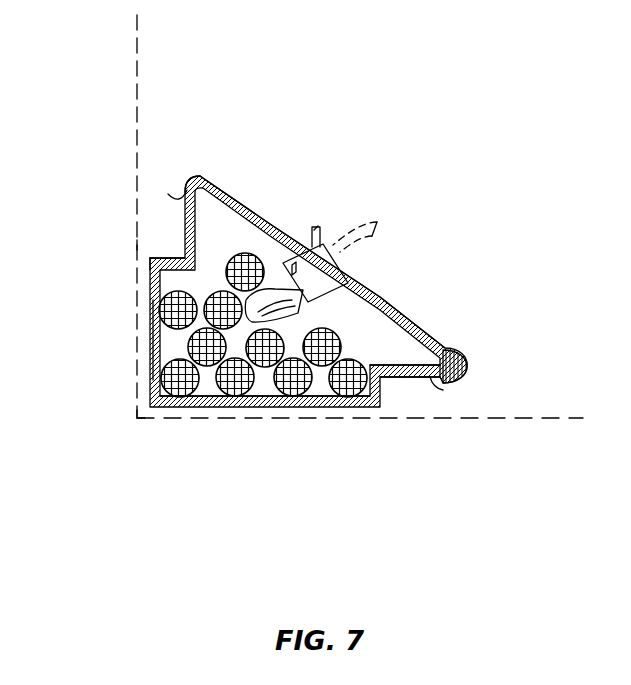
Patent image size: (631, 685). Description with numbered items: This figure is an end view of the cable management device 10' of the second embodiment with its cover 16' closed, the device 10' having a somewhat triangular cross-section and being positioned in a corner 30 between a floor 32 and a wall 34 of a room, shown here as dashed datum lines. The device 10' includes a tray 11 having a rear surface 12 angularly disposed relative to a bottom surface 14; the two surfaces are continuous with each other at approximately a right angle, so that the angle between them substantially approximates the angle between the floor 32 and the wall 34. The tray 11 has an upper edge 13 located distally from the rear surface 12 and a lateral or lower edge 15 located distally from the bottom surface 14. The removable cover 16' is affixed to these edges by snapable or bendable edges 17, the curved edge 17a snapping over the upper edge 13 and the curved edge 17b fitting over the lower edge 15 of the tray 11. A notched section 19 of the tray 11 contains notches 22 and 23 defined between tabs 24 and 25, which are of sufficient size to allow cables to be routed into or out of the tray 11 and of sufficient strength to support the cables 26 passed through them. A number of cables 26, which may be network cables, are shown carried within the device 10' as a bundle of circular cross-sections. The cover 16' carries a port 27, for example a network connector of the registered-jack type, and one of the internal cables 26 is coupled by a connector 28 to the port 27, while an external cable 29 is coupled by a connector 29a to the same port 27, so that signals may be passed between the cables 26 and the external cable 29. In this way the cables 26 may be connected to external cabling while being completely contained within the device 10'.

The cable management device 10' is at (317, 255).
The tray portion 11 is at (153, 380).
The rear surface 12 is at (148, 347).
The upper edge 13 is at (157, 208).
The bottom surface 14 is at (248, 398).
The lateral edge 15 is at (433, 385).
The cover 16' is at (341, 262).
The snapable edge 17 is at (190, 175).
The snapable edge 17a is at (173, 198).
The snapable edge 17b is at (430, 380).
The notched section 19 is at (467, 363).
The notch 22 is at (130, 245).
The notch 23 is at (402, 383).
The tab 24 is at (147, 207).
The tab 25 is at (418, 390).
The cable 26 is at (265, 302).
The port 27 is at (307, 245).
The connector 28 is at (343, 275).
The external cable 29 is at (375, 223).
The connector 29a is at (316, 226).
The corner 30 is at (140, 418).
The floor 32 is at (560, 420).
The wall 34 is at (137, 65).